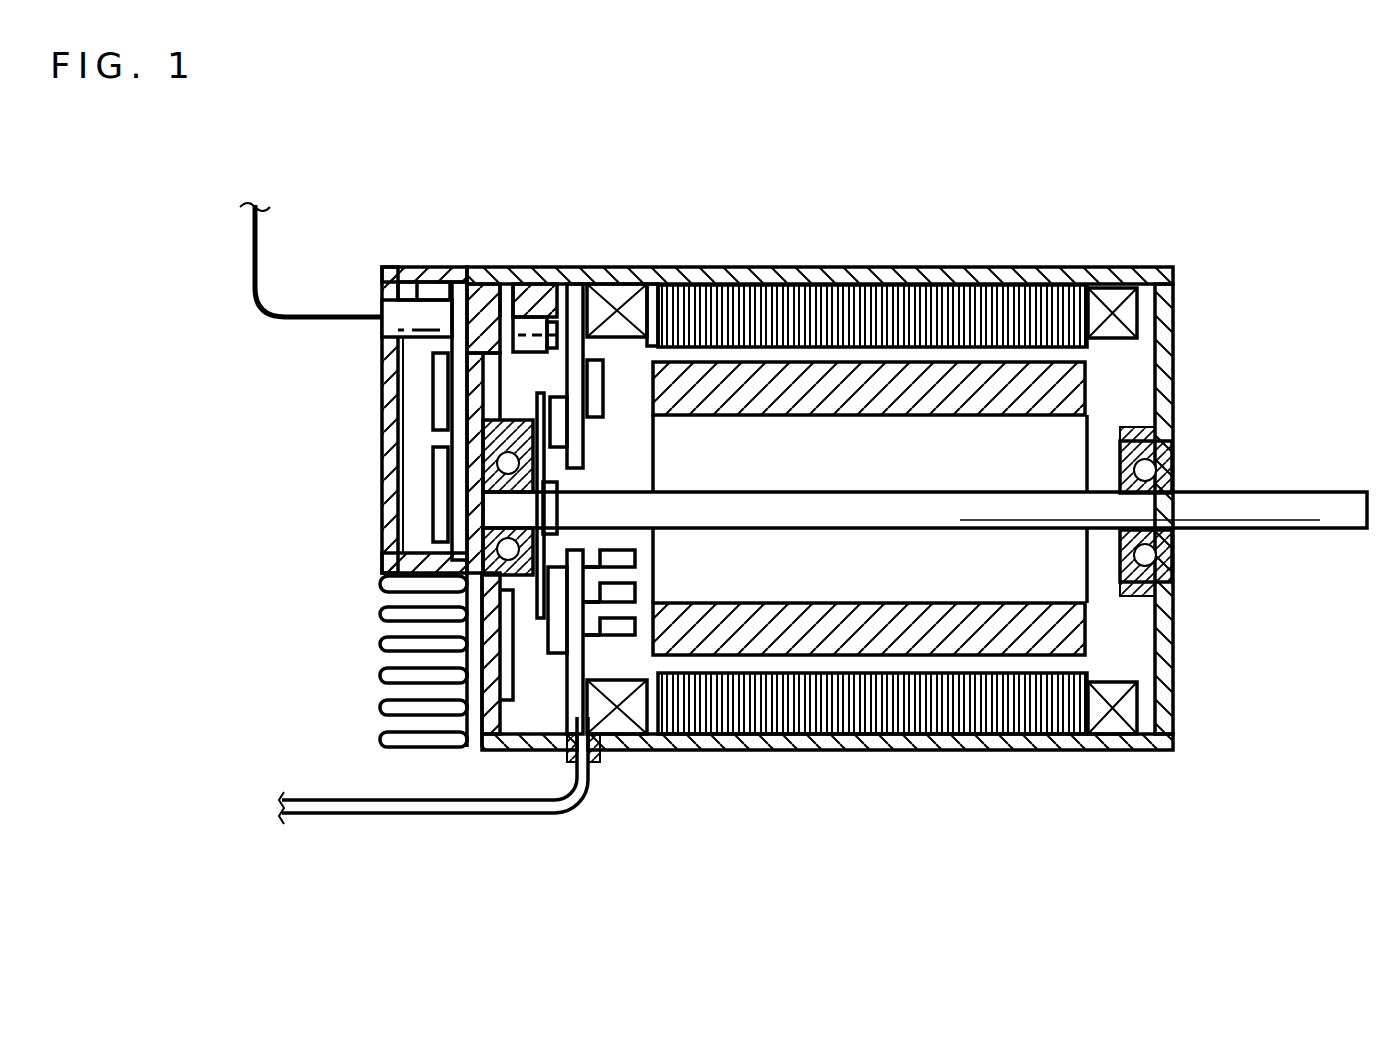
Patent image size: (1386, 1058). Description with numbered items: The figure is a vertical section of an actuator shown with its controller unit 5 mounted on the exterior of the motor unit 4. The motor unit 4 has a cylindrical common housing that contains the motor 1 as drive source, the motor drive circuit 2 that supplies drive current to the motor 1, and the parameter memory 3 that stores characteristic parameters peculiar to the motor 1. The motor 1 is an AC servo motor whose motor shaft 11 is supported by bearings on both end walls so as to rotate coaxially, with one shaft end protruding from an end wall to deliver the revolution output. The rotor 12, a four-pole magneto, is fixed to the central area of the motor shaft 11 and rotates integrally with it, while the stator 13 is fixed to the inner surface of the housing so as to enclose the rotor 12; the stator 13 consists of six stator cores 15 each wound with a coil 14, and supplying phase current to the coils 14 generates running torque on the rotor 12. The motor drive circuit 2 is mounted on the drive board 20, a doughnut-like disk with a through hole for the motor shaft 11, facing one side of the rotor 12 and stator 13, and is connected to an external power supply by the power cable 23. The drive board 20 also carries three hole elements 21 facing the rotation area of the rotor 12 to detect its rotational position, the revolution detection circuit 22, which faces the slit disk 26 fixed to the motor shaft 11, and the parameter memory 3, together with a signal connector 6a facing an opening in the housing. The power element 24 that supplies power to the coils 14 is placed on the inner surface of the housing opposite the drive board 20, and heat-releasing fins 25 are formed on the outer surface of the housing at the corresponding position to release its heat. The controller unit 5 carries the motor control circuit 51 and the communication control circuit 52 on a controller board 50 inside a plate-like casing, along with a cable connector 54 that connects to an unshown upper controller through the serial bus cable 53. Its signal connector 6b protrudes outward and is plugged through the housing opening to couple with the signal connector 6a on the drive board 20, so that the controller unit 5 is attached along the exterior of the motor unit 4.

The motor 1 is at (1125, 627).
The motor drive circuit 2 is at (548, 645).
The parameter memory 3 is at (605, 375).
The motor unit 4 is at (890, 268).
The controller unit 5 is at (382, 270).
The signal connector 6a is at (558, 300).
The signal connector 6b is at (516, 290).
The motor shaft 11 is at (1275, 492).
The rotor 12 is at (1085, 388).
The stator 13 is at (862, 510).
The coil 14 is at (1108, 290).
The stator core 15 is at (1015, 300).
The drive board 20 is at (590, 300).
The hole element 21 is at (636, 628).
The revolution detection circuit 22 is at (580, 440).
The power cable 23 is at (470, 815).
The power element 24 is at (505, 730).
The heat-releasing fins 25 is at (380, 610).
The slit disk 26 is at (538, 398).
The controller board 50 is at (456, 284).
The motor control circuit 51 is at (432, 486).
The communication control circuit 52 is at (432, 388).
The serial bus cable 53 is at (253, 257).
The cable connector 54 is at (416, 286).